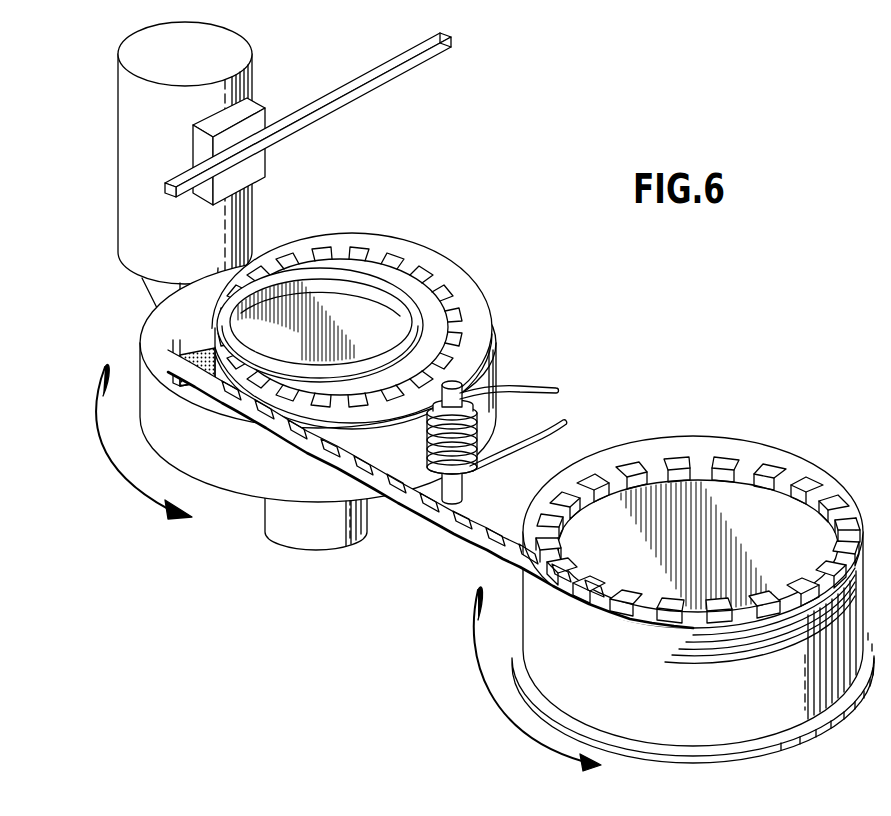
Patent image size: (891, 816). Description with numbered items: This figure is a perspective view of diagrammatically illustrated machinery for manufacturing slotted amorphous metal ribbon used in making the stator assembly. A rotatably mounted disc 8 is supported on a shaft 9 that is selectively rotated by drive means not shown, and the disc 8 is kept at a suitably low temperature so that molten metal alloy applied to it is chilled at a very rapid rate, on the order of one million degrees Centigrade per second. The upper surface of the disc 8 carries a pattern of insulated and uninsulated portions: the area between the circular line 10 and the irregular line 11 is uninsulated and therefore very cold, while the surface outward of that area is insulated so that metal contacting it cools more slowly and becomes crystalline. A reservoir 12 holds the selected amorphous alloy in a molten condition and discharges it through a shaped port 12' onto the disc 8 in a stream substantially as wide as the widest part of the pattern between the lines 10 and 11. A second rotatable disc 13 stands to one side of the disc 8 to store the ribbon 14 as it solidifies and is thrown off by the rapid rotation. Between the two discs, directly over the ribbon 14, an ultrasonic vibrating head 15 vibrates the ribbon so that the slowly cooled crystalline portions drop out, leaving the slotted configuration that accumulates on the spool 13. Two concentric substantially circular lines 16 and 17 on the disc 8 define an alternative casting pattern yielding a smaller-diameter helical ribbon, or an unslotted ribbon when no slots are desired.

The rotatably mounted disc 8 is at (488, 306).
The shaft 9 is at (280, 533).
The circular line 10 is at (457, 272).
The irregular line 11 is at (410, 268).
The reservoir 12 is at (149, 181).
The shaped port 12' is at (151, 345).
The second rotatable disc 13 is at (830, 720).
The ribbon 14 is at (447, 527).
The ultrasonic vibrating head 15 is at (463, 488).
The line 16 is at (347, 257).
The line 17 is at (310, 272).